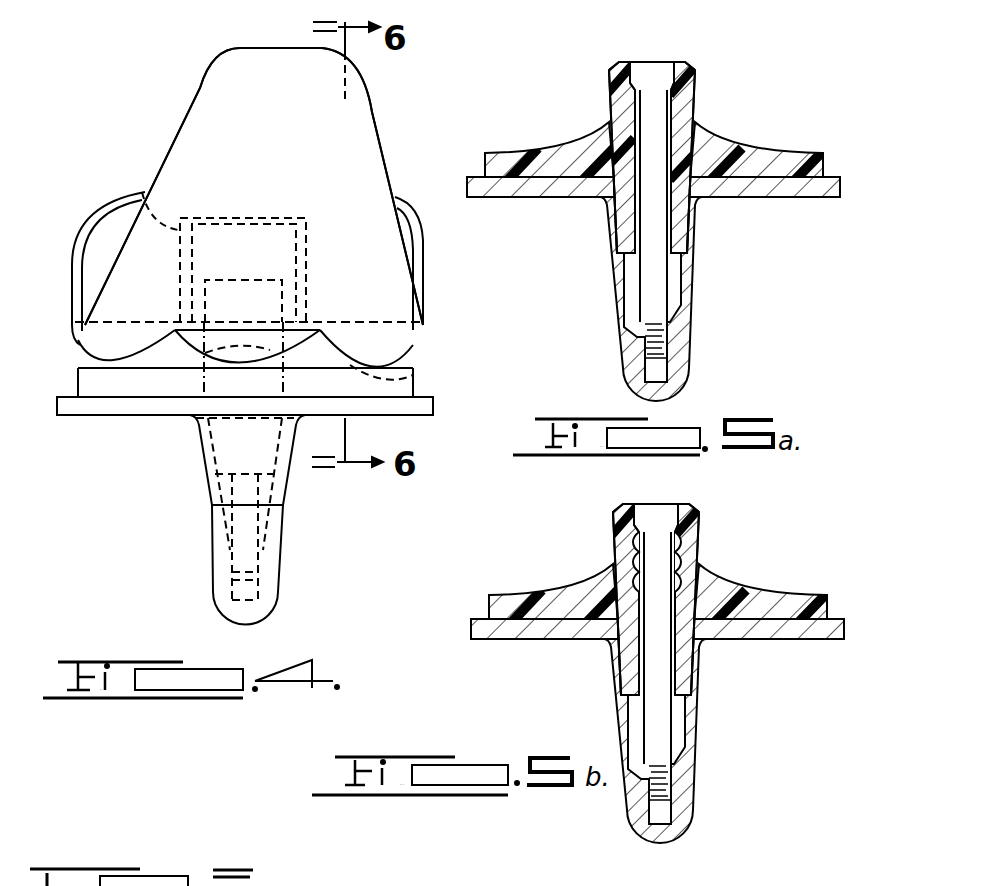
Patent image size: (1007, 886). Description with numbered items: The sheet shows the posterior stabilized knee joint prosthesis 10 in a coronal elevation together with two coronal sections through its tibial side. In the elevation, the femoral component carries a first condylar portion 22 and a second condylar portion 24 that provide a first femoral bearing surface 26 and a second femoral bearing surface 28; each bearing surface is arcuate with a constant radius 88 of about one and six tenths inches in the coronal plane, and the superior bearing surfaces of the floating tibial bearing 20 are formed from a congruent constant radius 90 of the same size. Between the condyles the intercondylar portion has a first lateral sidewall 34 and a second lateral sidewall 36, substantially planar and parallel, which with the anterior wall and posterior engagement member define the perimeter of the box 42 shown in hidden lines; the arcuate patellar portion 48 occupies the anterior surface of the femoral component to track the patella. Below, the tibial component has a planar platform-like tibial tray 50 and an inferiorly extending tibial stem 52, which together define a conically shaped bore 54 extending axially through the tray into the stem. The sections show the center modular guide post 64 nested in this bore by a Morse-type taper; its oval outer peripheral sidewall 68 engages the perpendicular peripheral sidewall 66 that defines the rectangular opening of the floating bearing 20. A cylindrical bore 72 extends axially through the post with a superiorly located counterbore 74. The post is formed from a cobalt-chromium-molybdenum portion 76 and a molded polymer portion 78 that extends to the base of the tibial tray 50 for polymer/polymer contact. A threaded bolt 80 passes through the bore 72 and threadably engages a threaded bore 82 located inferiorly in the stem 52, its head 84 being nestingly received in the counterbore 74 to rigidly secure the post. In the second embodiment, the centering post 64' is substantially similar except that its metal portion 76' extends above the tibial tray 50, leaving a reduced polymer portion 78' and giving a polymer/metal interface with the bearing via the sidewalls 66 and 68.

In FIG. 4, the knee joint prosthesis 10 is at (130, 70).
In FIG. 4, the floating tibial bearing 20 is at (90, 390).
In FIG. 4, the first condylar portion 22 is at (80, 343).
In FIG. 4, the second condylar portion 24 is at (400, 343).
In FIG. 4, the first femoral bearing surface 26 is at (135, 372).
In FIG. 4, the second femoral bearing surface 28 is at (415, 370).
In FIG. 4, the first lateral sidewall 34 is at (142, 190).
In FIG. 4, the second lateral sidewall 36 is at (305, 262).
In FIG. 4, the box 42 is at (255, 212).
In FIG. 4, the patellar portion 48 is at (350, 137).
In FIG. 4, the tibial tray 50 is at (433, 404).
In FIG. 4, the tibial stem 52 is at (272, 573).
In FIG. 4, the conically shaped bore 54 is at (280, 515).
In FIG. 5A, the center modular guide post 64 is at (683, 145).
In FIG. 5B, the centering post (second embodiment) 64' is at (696, 583).
In FIG. 5A, the peripheral sidewall 66 is at (690, 132).
In FIG. 5B, the peripheral sidewall 66 is at (694, 582).
In FIG. 5A, the outer peripheral sidewall 68 is at (604, 147).
In FIG. 5B, the outer peripheral sidewall 68 is at (610, 610).
In FIG. 5A, the cylindrical bore 72 is at (665, 236).
In FIG. 5B, the cylindrical bore 72 is at (682, 672).
In FIG. 5A, the counterbore 74 is at (660, 68).
In FIG. 5B, the counterbore 74 is at (665, 505).
In FIG. 5A, the cobalt-chromium-molybdenum portion 76 is at (706, 162).
In FIG. 5B, the metal portion (second embodiment) 76' is at (716, 547).
In FIG. 5A, the molded polymer portion 78 is at (593, 143).
In FIG. 5B, the polymer portion (second embodiment) 78' is at (574, 603).
In FIG. 5A, the threaded bolt 80 is at (658, 278).
In FIG. 5B, the threaded bolt 80 is at (658, 737).
In FIG. 5A, the threaded bore 82 is at (643, 340).
In FIG. 5B, the threaded bore 82 is at (653, 794).
In FIG. 5A, the head 84 is at (641, 72).
In FIG. 5B, the head 84 is at (645, 512).
In FIG. 4, the constant radius 88 is at (168, 385).
In FIG. 4, the constant radius 90 is at (353, 326).